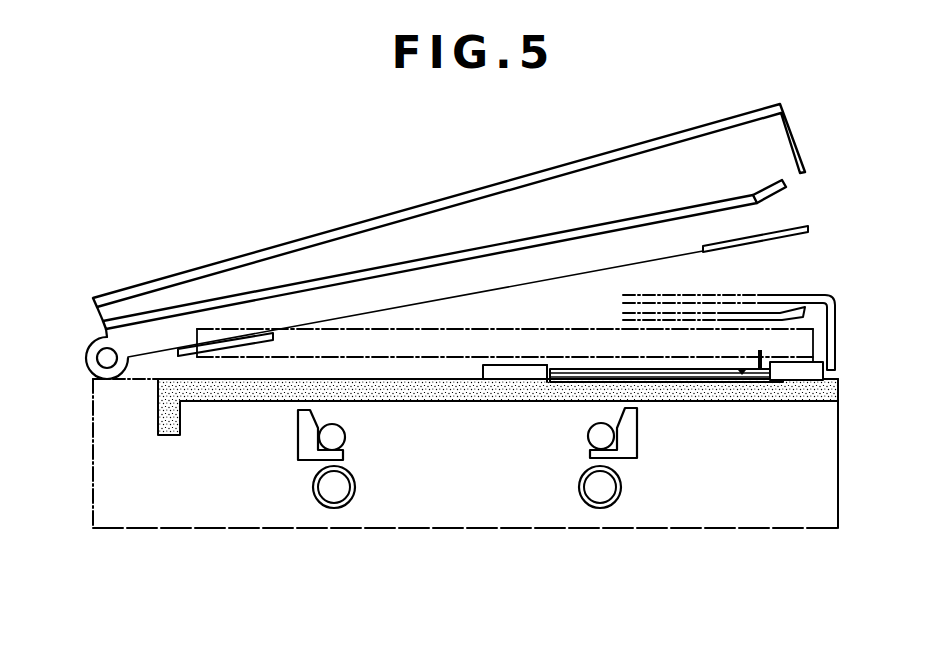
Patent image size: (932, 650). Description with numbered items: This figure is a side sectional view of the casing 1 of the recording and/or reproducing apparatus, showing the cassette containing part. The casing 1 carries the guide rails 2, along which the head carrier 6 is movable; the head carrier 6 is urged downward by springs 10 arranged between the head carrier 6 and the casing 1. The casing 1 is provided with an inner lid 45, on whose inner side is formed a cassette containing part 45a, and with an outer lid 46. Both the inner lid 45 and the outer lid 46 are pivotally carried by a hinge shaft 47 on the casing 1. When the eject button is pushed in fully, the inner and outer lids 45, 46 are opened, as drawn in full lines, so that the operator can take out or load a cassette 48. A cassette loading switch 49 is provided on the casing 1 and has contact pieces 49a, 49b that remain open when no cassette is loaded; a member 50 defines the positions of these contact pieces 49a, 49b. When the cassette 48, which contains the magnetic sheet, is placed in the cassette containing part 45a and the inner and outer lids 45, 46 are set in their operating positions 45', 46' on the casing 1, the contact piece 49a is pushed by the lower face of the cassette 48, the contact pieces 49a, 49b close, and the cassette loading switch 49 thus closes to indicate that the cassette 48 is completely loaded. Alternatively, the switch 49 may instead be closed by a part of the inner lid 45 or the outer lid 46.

The casing 1 is at (840, 440).
The guide rails 2 is at (352, 438).
The head carrier 6 is at (307, 457).
The springs 10 is at (331, 509).
The inner lid 45 is at (430, 226).
The cassette containing part 45a is at (780, 207).
The operating position of inner lid 45' is at (756, 311).
The outer lid 46 is at (449, 212).
The operating position of outer lid 46' is at (738, 271).
The hinge shaft 47 is at (88, 367).
The cassette 48 is at (388, 330).
The cassette loading switch 49 is at (634, 331).
The contact piece 49a is at (590, 373).
The contact piece 49b is at (627, 378).
The member 50 is at (813, 370).